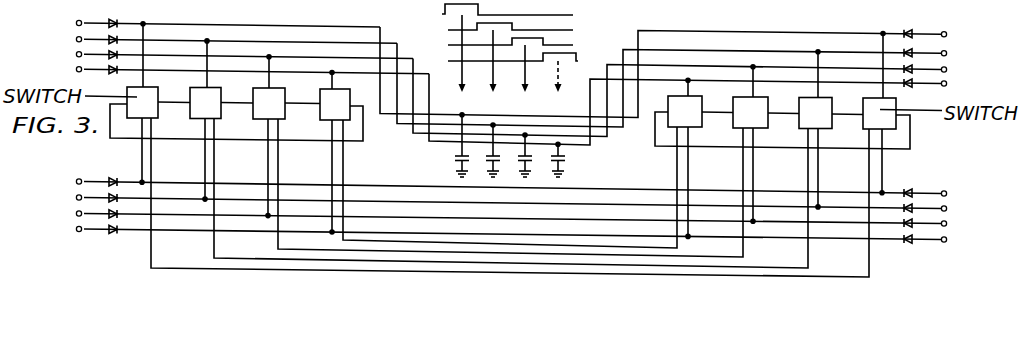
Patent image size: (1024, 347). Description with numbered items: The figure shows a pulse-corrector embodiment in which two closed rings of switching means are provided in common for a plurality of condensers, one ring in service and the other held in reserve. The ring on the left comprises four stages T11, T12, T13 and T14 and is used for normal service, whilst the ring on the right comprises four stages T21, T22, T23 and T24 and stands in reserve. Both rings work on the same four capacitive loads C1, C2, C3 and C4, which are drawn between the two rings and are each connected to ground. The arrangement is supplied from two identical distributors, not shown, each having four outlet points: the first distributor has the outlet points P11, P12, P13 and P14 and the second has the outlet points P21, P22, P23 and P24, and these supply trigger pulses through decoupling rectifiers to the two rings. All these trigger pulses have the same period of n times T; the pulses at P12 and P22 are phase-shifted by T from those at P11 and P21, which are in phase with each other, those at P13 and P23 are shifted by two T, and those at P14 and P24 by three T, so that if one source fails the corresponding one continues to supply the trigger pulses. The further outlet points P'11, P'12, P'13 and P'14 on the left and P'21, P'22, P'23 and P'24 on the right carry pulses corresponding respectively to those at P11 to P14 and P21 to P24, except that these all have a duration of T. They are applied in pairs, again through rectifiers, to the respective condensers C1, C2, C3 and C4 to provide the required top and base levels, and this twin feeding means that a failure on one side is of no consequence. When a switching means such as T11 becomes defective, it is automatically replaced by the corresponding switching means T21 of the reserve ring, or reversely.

The switching stage T11 is at (157, 95).
The switching stage T12 is at (221, 96).
The switching stage T13 is at (284, 96).
The switching stage T14 is at (350, 97).
The reserve switching stage T21 is at (896, 109).
The reserve switching stage T22 is at (831, 106).
The reserve switching stage T23 is at (766, 105).
The reserve switching stage T24 is at (701, 104).
The capacitive load C1 is at (455, 157).
The capacitive load C2 is at (488, 159).
The capacitive load C3 is at (533, 160).
The capacitive load C4 is at (565, 158).
The distributor outlet point P'11 is at (77, 19).
The distributor outlet point P'12 is at (76, 36).
The distributor outlet point P'13 is at (75, 52).
The distributor outlet point P'14 is at (72, 67).
The distributor outlet point P11 is at (79, 178).
The distributor outlet point P12 is at (77, 194).
The distributor outlet point P13 is at (75, 209).
The distributor outlet point P14 is at (72, 225).
The distributor outlet point P'21 is at (950, 32).
The distributor outlet point P'22 is at (952, 50).
The distributor outlet point P'23 is at (952, 67).
The distributor outlet point P'24 is at (952, 84).
The distributor outlet point P21 is at (949, 193).
The distributor outlet point P22 is at (950, 208).
The distributor outlet point P23 is at (950, 224).
The distributor outlet point P24 is at (950, 239).